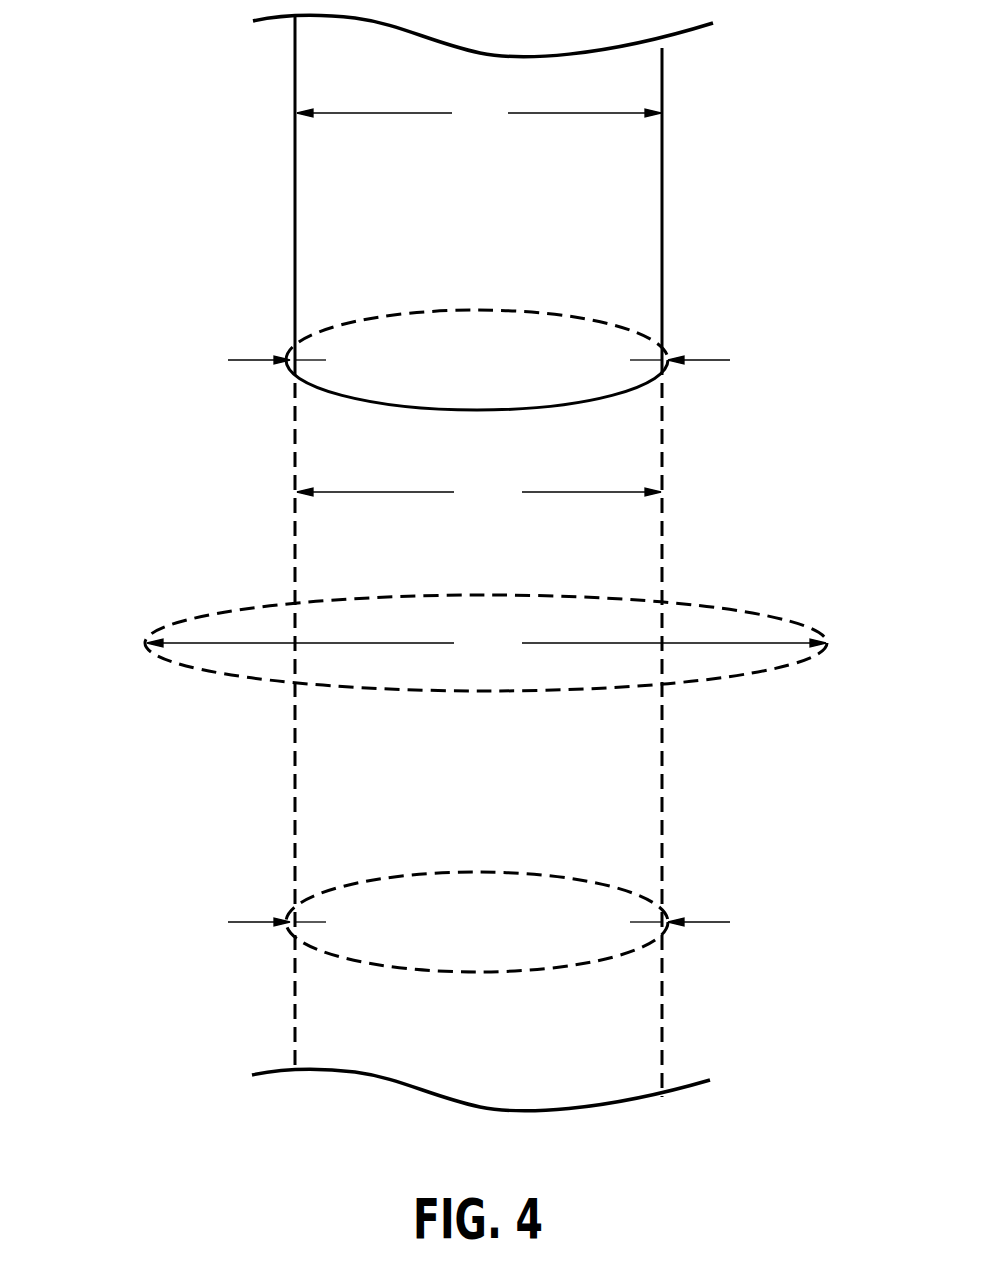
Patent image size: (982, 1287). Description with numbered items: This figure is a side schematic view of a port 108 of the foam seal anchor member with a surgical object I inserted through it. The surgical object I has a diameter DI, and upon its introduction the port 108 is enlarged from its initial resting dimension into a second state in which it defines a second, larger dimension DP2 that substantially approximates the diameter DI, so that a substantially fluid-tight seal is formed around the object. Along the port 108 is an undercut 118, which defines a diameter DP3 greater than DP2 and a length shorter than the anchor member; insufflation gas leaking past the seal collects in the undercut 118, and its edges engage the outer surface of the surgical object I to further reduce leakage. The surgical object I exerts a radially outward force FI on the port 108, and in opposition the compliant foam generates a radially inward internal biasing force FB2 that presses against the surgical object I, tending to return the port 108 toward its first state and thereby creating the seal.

The port 108 is at (287, 362).
The undercut 118 is at (738, 623).
The surgical object I is at (638, 292).
The diameter of surgical object DI is at (479, 118).
The second dimension of port DP2 is at (479, 497).
The diameter of undercut DP3 is at (486, 648).
The internal biasing force FB2 is at (476, 644).
The force exerted by surgical object FI is at (479, 644).